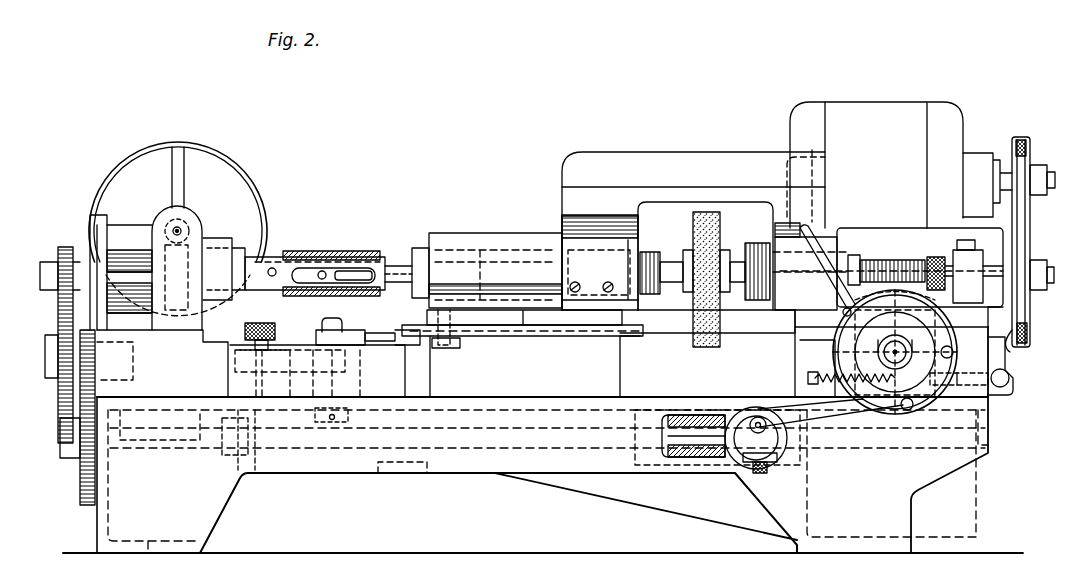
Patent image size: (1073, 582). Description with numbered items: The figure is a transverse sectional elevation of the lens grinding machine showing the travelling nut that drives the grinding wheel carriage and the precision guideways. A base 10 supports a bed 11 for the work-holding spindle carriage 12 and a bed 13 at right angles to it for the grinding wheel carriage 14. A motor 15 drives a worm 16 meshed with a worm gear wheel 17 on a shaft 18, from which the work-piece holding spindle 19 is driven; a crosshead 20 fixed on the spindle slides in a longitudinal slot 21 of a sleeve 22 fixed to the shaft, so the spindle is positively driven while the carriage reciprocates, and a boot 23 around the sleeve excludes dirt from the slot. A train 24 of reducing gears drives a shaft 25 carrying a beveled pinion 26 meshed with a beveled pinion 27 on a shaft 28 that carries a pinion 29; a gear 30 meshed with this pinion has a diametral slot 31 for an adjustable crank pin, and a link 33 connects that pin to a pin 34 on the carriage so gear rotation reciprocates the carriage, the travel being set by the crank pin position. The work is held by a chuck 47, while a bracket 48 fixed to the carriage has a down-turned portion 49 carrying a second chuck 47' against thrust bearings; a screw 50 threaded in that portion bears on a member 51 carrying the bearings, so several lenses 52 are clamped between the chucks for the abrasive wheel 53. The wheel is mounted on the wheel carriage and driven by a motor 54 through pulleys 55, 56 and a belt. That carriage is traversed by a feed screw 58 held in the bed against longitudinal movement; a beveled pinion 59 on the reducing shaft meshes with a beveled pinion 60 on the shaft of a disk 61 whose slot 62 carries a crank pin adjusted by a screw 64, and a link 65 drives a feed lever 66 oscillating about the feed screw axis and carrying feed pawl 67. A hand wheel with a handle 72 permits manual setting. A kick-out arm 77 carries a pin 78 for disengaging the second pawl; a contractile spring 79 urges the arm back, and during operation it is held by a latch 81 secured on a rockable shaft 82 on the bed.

The base 10 is at (548, 466).
The bed 11 is at (614, 400).
The work-holding spindle carriage 12 is at (567, 330).
The bed 13 is at (795, 358).
The grinding wheel carriage 14 is at (925, 249).
The motor 15 is at (166, 145).
The worm 16 is at (182, 223).
The worm gear wheel 17 is at (208, 242).
The shaft 18 is at (240, 262).
The work-piece holding spindle 19 is at (396, 264).
The crosshead 20 is at (340, 268).
The longitudinal slot 21 is at (365, 268).
The sleeve 22 is at (268, 258).
The boot 23 is at (300, 253).
The train of reducing gears 24 is at (62, 300).
The shaft 25 is at (182, 453).
The beveled pinion 26 is at (247, 462).
The beveled pinion 27 is at (282, 428).
The shaft 28 is at (206, 383).
The pinion 29 is at (274, 350).
The gear 30 is at (385, 355).
The diametral slot 31 is at (338, 328).
The link 33 is at (360, 334).
The pin 34 is at (460, 327).
The chuck 47 is at (627, 270).
The second chuck 47' is at (741, 291).
The bracket 48 is at (661, 168).
The down-turned portion 49 is at (830, 216).
The screw 50 is at (865, 262).
The member 51 is at (790, 260).
The lenses 52 is at (705, 262).
The abrasive wheel 53 is at (708, 336).
The motor 54 is at (880, 147).
The pulley 55 is at (1012, 152).
The pulley 56 is at (1012, 338).
The feed screw 58 is at (889, 350).
The beveled pinion 59 is at (745, 410).
The beveled pinion 60 is at (758, 417).
The disk 61 is at (790, 444).
The slot 62 is at (792, 460).
The screw 64 is at (762, 475).
The link 65 is at (848, 410).
The feed lever 66 is at (935, 308).
The feed pawl 67 is at (933, 258).
The handle 72 is at (952, 350).
The kick-out arm 77 is at (832, 322).
The pin 78 is at (843, 312).
The contractile spring 79 is at (847, 378).
The latch 81 is at (997, 398).
The shaft 82 is at (1006, 386).